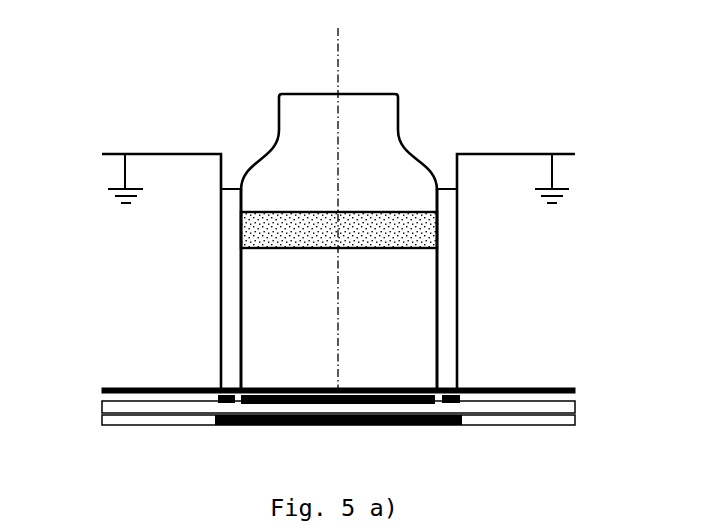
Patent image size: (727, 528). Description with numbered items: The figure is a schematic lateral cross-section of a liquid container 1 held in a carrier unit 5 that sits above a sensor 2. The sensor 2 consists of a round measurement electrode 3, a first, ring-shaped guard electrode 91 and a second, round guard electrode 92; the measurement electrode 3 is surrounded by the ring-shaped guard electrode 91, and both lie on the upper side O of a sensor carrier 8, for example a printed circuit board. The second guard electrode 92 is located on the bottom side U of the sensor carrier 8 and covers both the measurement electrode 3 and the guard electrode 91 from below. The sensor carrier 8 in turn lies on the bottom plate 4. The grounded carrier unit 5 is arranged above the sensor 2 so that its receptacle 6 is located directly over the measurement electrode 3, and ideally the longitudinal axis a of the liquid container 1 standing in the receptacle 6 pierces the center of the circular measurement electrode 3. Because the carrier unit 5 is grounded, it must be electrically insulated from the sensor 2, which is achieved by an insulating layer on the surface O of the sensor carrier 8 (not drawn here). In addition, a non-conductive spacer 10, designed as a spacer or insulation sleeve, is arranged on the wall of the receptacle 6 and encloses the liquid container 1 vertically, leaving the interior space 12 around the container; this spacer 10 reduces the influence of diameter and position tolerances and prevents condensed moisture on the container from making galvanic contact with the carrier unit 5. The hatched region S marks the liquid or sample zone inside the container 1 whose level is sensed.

The liquid container 1 is at (405, 83).
The sensor 2 is at (592, 400).
The measurement electrode 3 is at (330, 405).
The bottom plate 4 is at (537, 428).
The carrier unit 5 is at (175, 148).
The receptacle 6 is at (430, 148).
The sensor carrier 8 is at (102, 408).
The spacer 10 is at (230, 293).
The inner cavity 12 is at (397, 336).
The first guard electrode 91 is at (213, 392).
The second guard electrode 92 is at (400, 427).
The longitudinal axis a is at (338, 194).
The sensor material S is at (310, 223).
The upper side O is at (103, 394).
The bottom side U is at (103, 418).